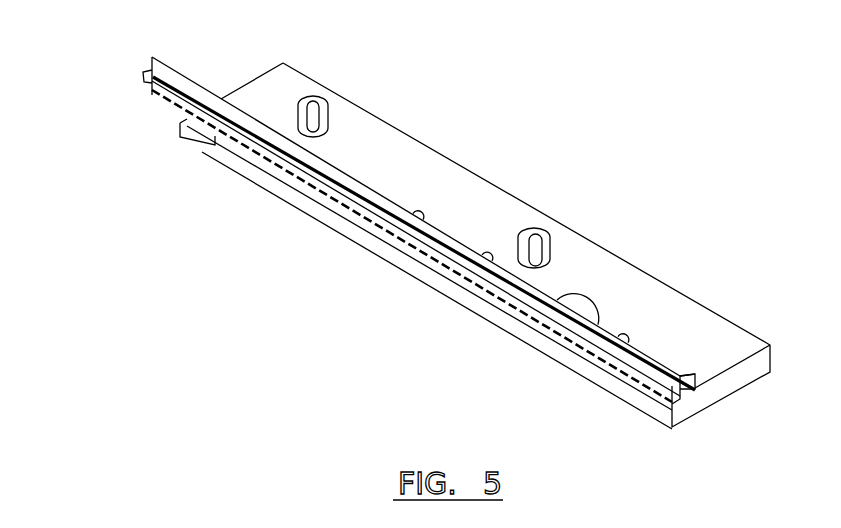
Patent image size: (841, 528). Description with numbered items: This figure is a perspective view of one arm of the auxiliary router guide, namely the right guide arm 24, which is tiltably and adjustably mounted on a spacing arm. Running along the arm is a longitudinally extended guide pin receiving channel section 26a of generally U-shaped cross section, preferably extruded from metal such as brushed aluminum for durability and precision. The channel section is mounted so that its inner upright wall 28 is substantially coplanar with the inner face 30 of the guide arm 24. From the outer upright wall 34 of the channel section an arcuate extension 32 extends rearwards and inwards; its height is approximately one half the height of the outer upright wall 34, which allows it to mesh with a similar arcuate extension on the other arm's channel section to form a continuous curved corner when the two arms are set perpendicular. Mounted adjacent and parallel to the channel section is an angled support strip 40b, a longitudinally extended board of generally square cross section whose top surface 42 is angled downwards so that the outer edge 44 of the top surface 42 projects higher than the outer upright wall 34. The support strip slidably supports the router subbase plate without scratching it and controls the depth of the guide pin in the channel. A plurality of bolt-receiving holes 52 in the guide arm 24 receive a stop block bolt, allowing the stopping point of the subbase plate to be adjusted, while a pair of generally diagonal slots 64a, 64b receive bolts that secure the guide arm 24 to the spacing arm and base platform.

The right guide arm 24 is at (663, 312).
The channel section 26a is at (297, 183).
The inner upright wall 28 is at (378, 228).
The inner face 30 is at (427, 283).
The arcuate extension 32 is at (147, 76).
The outer upright wall 34 is at (440, 228).
The angled support strip 40b is at (672, 362).
The top surface 42 is at (392, 208).
The outer edge 44 is at (363, 180).
The bolt-receiving hole 52 is at (582, 337).
The diagonal slot 64a is at (542, 246).
The diagonal slot 64b is at (324, 109).